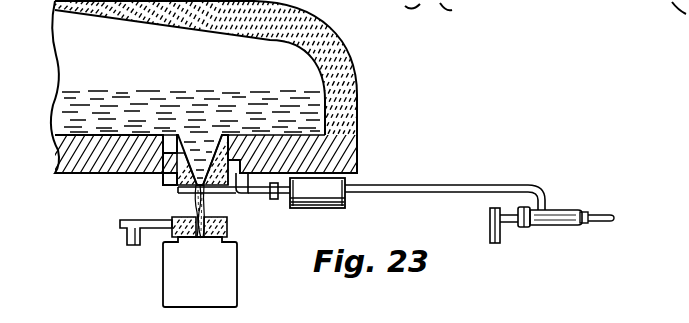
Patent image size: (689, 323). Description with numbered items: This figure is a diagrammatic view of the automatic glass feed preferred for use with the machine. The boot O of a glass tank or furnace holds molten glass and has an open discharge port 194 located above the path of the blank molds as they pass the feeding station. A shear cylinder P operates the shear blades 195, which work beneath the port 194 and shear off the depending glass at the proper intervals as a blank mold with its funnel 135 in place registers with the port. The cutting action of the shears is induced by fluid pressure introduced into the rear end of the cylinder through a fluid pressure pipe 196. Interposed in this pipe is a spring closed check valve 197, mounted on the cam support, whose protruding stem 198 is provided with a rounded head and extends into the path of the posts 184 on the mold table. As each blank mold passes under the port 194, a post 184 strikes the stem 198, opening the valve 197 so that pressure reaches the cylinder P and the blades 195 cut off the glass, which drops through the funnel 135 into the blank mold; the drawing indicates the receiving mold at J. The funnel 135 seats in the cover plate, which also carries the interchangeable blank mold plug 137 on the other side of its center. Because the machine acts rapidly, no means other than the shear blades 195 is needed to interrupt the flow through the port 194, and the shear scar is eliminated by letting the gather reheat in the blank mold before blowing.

The boot of glass tank O is at (357, 108).
The discharge port 194 is at (173, 176).
The funnel 135 is at (192, 210).
The shear blades 195 is at (247, 195).
The shear cylinder P is at (322, 197).
The fluid pressure pipe 196 is at (408, 184).
The posts 184 is at (483, 225).
The protruding stem 198 is at (513, 226).
The spring closed check valve 197 is at (560, 226).
The jar J is at (201, 259).
The blank mold plug 137 is at (125, 238).